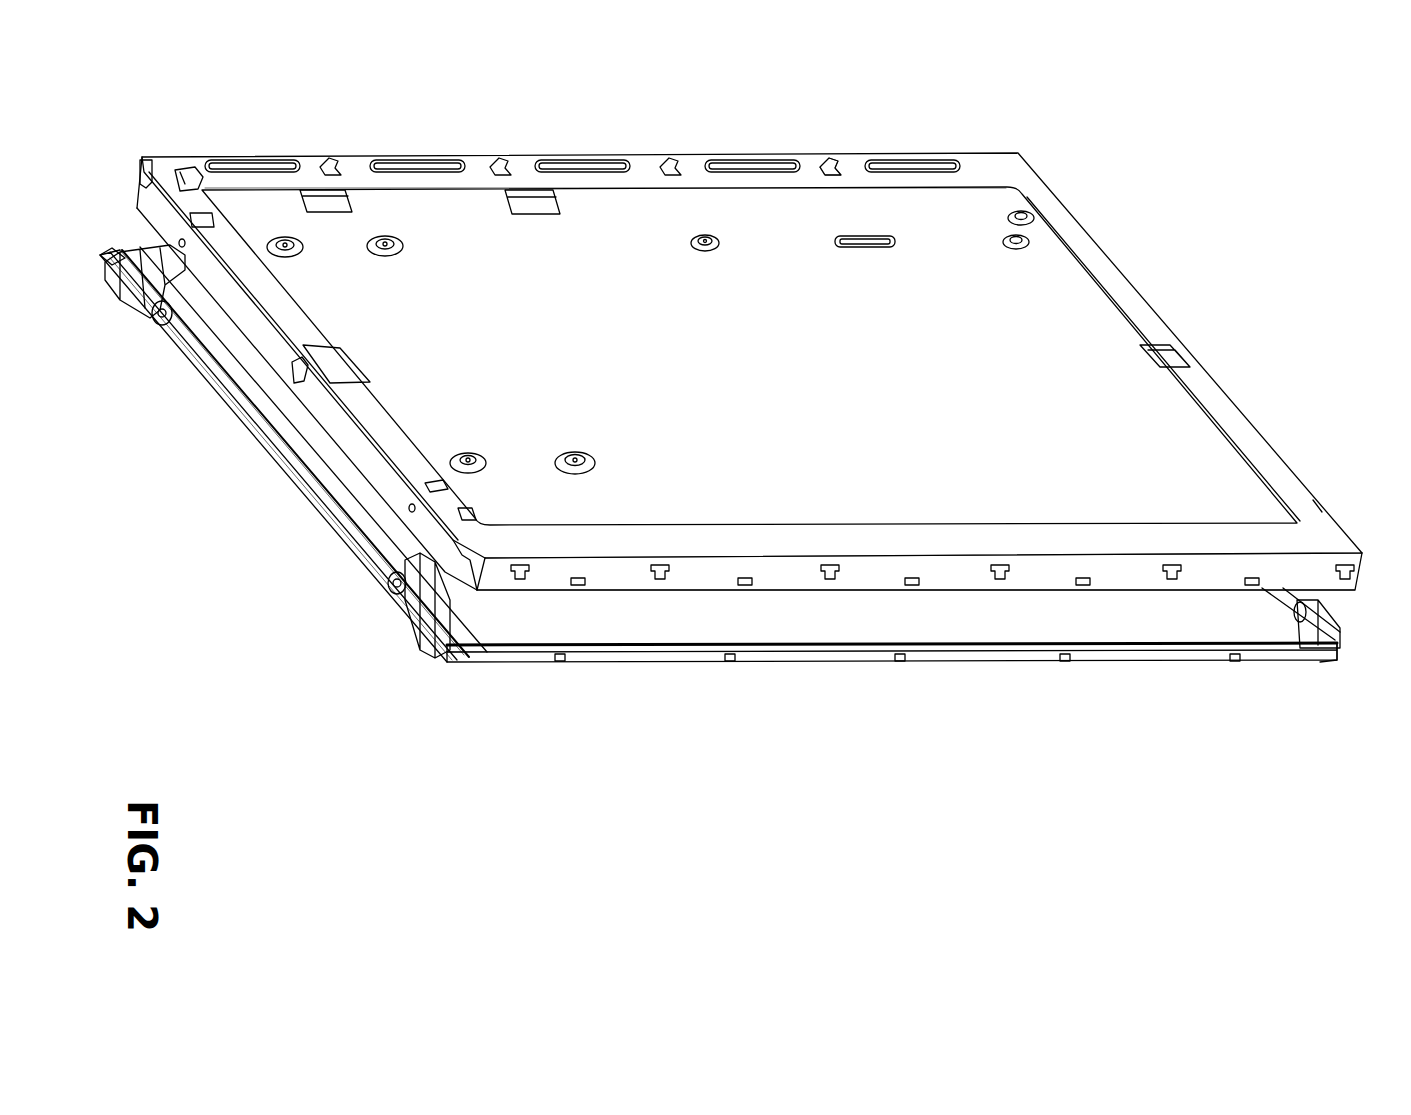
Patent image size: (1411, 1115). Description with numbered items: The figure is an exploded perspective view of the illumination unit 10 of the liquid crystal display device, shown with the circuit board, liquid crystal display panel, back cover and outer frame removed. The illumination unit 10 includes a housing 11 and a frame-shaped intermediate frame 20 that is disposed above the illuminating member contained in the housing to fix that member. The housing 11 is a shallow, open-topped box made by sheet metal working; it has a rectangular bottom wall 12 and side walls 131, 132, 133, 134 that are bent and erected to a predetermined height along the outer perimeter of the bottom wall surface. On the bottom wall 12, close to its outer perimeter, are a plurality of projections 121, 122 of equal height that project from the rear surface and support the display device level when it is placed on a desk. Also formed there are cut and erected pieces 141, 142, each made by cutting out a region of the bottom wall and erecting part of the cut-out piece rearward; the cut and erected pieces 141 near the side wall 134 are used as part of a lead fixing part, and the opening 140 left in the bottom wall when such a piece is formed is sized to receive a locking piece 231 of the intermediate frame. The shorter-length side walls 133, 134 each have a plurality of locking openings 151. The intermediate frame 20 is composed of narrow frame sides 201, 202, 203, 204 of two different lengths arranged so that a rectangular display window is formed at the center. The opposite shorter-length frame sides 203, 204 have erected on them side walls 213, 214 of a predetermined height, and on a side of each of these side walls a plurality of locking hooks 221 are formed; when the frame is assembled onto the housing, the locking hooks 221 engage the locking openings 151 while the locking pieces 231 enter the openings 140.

The illumination unit 10 is at (1085, 184).
The housing 11 is at (830, 158).
The bottom wall 12 is at (627, 220).
The projections 121 is at (300, 252).
The projections 122 is at (268, 160).
The side wall 131 is at (686, 575).
The side wall 132 is at (525, 158).
The side wall 133 is at (1158, 315).
The side wall 134 is at (355, 442).
The opening 140 is at (215, 220).
The cut and erected pieces 141 is at (200, 175).
The cut and erected pieces 142 is at (340, 160).
The locking opening 151 is at (148, 173).
The intermediate frame 20 is at (413, 658).
The frame side 201 is at (1000, 655).
The frame side 202 is at (148, 262).
The frame side 203 is at (1310, 662).
The frame side 204 is at (268, 432).
The side wall 213 is at (1312, 620).
The side wall 214 is at (335, 455).
The locking hook 221 is at (150, 297).
The locking piece 231 is at (160, 326).